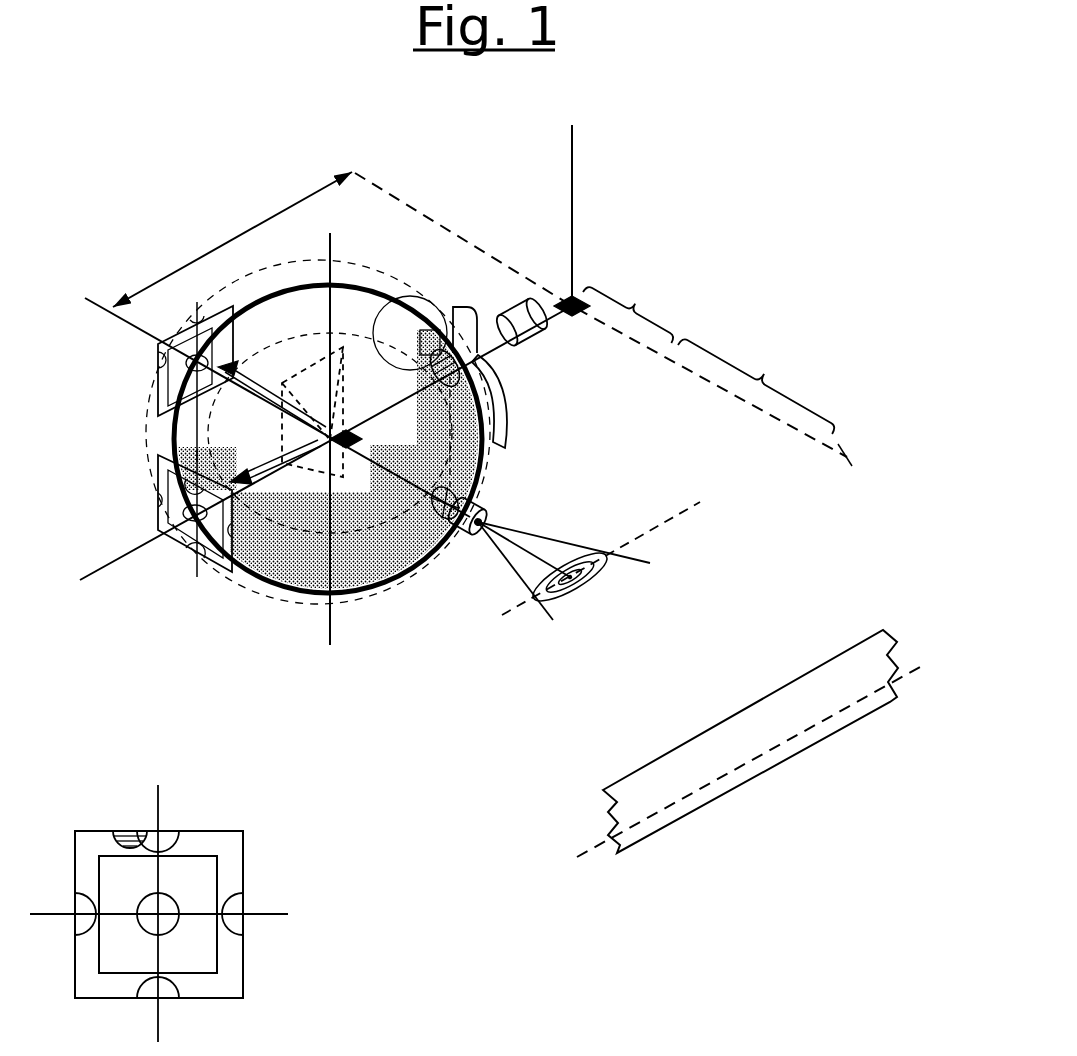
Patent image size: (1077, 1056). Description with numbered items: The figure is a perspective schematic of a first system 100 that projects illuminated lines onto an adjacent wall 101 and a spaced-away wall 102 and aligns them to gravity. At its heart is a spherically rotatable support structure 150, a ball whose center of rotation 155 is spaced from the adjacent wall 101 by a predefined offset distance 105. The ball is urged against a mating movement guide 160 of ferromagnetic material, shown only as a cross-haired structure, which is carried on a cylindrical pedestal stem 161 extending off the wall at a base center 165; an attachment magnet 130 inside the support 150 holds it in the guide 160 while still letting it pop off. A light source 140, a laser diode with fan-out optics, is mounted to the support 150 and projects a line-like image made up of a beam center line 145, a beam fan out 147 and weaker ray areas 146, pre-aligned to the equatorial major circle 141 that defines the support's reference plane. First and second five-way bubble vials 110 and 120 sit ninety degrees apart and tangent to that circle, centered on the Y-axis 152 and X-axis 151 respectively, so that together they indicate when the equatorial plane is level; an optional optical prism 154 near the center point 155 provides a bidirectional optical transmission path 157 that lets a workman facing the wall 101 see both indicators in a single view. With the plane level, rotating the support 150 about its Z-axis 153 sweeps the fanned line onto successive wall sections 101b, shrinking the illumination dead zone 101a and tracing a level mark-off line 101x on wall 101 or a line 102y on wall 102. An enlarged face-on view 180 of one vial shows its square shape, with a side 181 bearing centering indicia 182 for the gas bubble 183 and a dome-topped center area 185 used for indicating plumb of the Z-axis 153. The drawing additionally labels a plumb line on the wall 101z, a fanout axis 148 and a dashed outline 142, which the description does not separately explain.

The first system 100 is at (518, 102).
The wall 101 is at (840, 443).
The illumination dead zone 101a is at (635, 303).
The wall section 101b is at (764, 373).
The projected line pattern 101x is at (345, 167).
The plumb Z-axis on wall #1 101z is at (572, 112).
The wall 102 is at (777, 683).
The projected line pattern 102y is at (568, 863).
The offset distance 105 is at (243, 227).
The five-way bubble vial 110 is at (167, 555).
The five-way bubble vial 120 is at (157, 350).
The attachment magnet 130 is at (382, 313).
The light source 140 is at (457, 540).
The equatorial major circle 141 is at (500, 462).
The offset sphere outline 142 is at (362, 268).
The beam center line 145 is at (577, 578).
The ray areas 146 is at (603, 563).
The beam fan out 147 is at (652, 558).
The fanout axis 148 is at (660, 523).
The spherically rotatable support structure 150 is at (258, 620).
The X-axis 151 is at (74, 298).
The Y-axis 152 is at (80, 582).
The Z-axis 153 is at (328, 652).
The optical prism 154 is at (160, 482).
The center of rotation 155 is at (360, 438).
The bidirectional optical transmission path 157 is at (301, 463).
The movement guide 160 is at (508, 388).
The pedestal stem 161 is at (530, 338).
The base center 165 is at (573, 296).
The five-way bubble vial side plan view 180 is at (247, 1003).
The side 181 is at (207, 831).
The centering indicia 182 is at (170, 830).
The gas bubble 183 is at (127, 827).
The dome-topped center area 185 is at (178, 932).